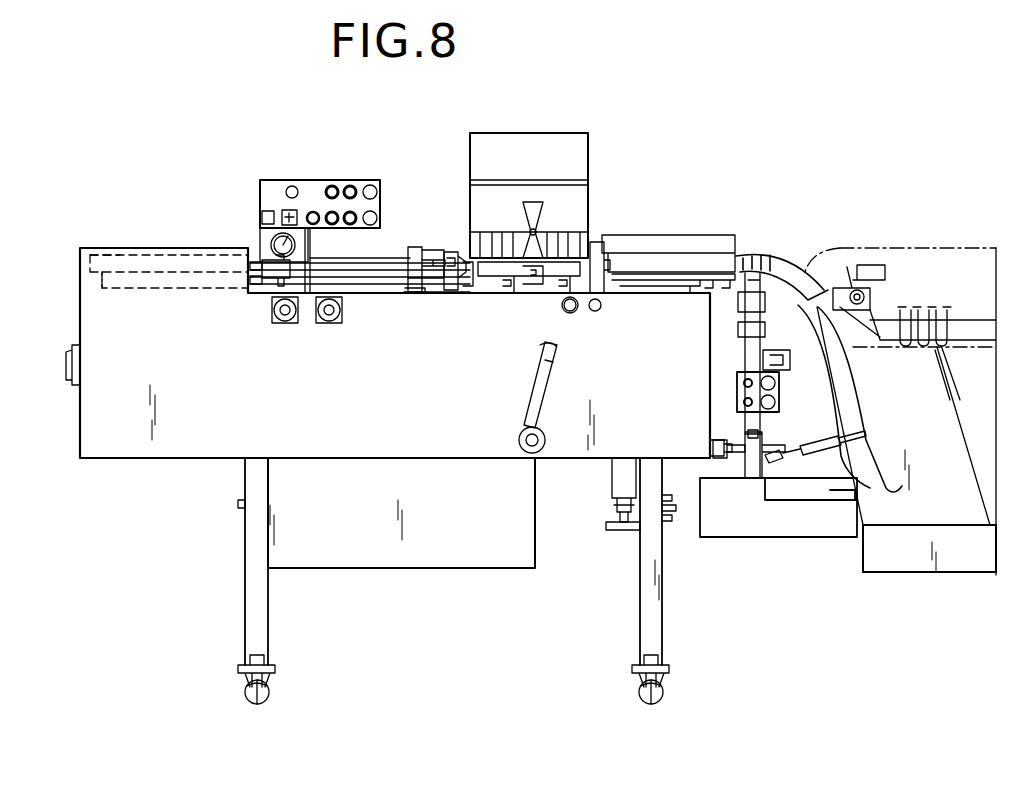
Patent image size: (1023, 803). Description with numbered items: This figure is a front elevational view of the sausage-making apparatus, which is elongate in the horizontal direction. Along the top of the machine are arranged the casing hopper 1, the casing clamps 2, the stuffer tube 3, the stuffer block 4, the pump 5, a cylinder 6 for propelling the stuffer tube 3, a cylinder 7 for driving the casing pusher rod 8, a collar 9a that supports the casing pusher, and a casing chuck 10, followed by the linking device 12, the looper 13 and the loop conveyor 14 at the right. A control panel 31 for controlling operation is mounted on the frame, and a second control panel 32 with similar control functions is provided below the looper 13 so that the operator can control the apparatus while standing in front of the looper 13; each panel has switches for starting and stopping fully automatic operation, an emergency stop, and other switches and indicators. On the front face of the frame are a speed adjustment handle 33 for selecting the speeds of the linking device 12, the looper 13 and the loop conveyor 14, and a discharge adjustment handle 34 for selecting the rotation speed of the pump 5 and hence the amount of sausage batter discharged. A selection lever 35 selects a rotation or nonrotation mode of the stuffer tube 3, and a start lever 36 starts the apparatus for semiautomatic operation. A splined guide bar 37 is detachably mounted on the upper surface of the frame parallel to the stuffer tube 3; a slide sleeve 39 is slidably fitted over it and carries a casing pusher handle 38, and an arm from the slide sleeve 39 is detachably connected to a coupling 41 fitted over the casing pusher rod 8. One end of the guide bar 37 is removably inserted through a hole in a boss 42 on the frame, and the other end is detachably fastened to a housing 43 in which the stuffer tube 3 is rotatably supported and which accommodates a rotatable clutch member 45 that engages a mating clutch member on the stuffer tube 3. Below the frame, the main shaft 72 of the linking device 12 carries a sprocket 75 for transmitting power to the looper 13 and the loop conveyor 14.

The casing hopper 1 is at (590, 168).
The casing clamps 2 is at (492, 277).
The stuffer tube 3 is at (372, 264).
The stuffer block 4 is at (452, 258).
The pump 5 is at (432, 255).
The cylinder 6 is at (172, 255).
The cylinder 7 is at (165, 282).
The casing pusher rod 8 is at (368, 285).
The collar 9a is at (470, 287).
The casing chuck 10 is at (596, 245).
The linking device 12 is at (640, 250).
The looper 13 is at (786, 258).
The loop conveyor 14 is at (900, 246).
The control panel 31 is at (350, 182).
The control panel 32 is at (737, 388).
The speed adjustment handle 33 is at (283, 323).
The discharge adjustment handle 34 is at (328, 323).
The selection lever 35 is at (601, 307).
The start lever 36 is at (566, 352).
The guide bar 37 is at (334, 265).
The casing pusher handle 38 is at (275, 258).
The slide sleeve 39 is at (268, 290).
The coupling 41 is at (252, 285).
The boss 42 is at (252, 273).
The housing 43 is at (417, 293).
The clutch member 45 is at (406, 257).
The main shaft 72 is at (618, 516).
The sprocket 75 is at (620, 530).